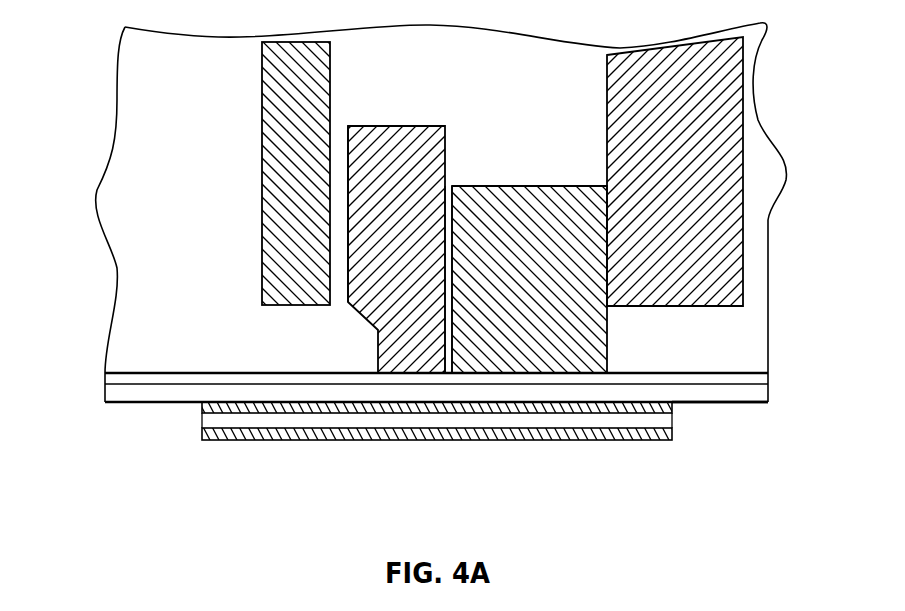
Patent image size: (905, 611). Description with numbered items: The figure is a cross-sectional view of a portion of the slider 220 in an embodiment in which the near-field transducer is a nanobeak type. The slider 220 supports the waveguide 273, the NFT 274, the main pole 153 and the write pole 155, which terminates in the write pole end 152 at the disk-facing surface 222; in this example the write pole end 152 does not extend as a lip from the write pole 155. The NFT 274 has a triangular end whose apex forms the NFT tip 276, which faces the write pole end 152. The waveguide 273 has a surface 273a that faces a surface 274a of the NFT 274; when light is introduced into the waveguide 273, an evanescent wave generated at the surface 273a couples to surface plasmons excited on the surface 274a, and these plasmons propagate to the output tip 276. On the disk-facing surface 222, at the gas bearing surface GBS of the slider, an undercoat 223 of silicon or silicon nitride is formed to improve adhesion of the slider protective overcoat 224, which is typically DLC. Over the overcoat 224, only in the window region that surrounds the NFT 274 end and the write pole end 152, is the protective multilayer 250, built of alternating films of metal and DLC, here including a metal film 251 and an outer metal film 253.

The slider 220 is at (130, 103).
The waveguide 273 is at (268, 165).
The waveguide surface 273a is at (331, 158).
The near-field transducer (NFT) 274 is at (378, 352).
The NFT surface 274a is at (348, 272).
The write pole 155 is at (471, 198).
The write pole end 152 is at (583, 360).
The main pole 153 is at (620, 157).
The NFT tip 276 is at (447, 362).
The disk-facing surface 222 is at (105, 373).
The undercoat 223 is at (105, 384).
The slider protective overcoat 224 is at (105, 393).
The gas bearing surface GBS is at (118, 402).
The metal film 251 is at (202, 407).
The outer metal film 253 is at (202, 440).
The protective multilayer 250 is at (693, 402).